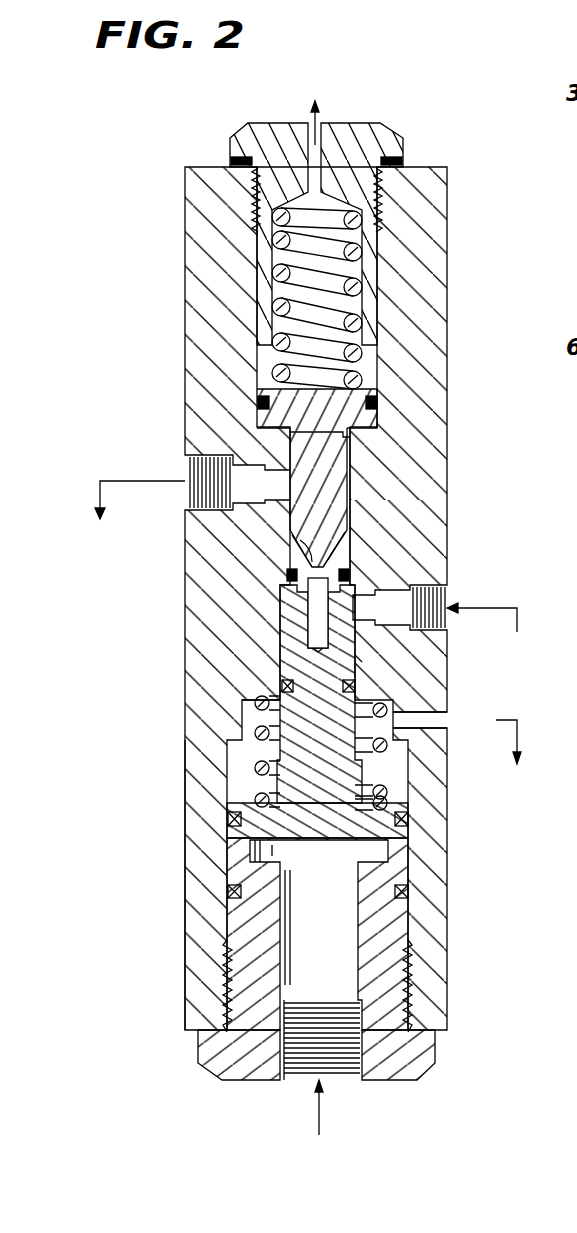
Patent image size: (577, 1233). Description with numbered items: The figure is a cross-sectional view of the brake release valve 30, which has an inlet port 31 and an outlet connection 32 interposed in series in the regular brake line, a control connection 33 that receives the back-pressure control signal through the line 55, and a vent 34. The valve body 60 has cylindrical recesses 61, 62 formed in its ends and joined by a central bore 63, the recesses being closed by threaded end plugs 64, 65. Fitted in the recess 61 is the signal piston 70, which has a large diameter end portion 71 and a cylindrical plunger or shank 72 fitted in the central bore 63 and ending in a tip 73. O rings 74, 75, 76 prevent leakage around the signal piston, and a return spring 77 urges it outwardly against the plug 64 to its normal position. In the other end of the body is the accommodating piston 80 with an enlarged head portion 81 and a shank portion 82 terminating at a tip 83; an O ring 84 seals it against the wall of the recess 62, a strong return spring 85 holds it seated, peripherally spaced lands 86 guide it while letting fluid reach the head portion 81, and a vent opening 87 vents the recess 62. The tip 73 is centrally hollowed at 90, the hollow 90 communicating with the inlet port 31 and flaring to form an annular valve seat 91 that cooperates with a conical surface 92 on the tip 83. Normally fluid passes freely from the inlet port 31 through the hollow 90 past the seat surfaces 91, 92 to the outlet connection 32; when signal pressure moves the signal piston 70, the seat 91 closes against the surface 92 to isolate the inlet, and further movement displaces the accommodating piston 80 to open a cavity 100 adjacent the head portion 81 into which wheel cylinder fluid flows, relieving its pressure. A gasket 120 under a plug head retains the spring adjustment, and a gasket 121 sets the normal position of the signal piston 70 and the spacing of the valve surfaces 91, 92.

The brake release valve 30 is at (454, 516).
The inlet port 31 is at (449, 588).
The outlet connection 32 is at (185, 468).
The control connection 33 is at (305, 1081).
The vent 34 is at (445, 718).
The line 55 is at (316, 1125).
The valve body 60 is at (185, 742).
The cylindrical recess 61 is at (237, 782).
The cylindrical recess 62 is at (268, 292).
The central bore 63 is at (360, 660).
The threaded end plug 64 is at (206, 1072).
The threaded end plug 65 is at (248, 128).
The signal piston 70 is at (355, 780).
The large diameter end portion 71 is at (226, 838).
The cylindrical plunger or shank 72 is at (280, 658).
The tip 73 is at (349, 556).
The O ring 74 is at (410, 843).
The O ring 75 is at (355, 684).
The O ring 76 is at (287, 575).
The return spring 77 is at (240, 728).
The accommodating piston 80 is at (362, 389).
The enlarged head portion 81 is at (258, 418).
The shank portion 82 is at (335, 488).
The tip 83 is at (335, 540).
The O ring 84 is at (378, 406).
The return spring 85 is at (372, 309).
The lands 86 is at (350, 452).
The vent opening 87 is at (332, 130).
The hollow 90 is at (307, 622).
The annular valve seat 91 is at (300, 540).
The conical surface 92 is at (338, 562).
The cavity 100 is at (288, 435).
The gasket 120 is at (408, 146).
The gasket 121 is at (437, 1042).